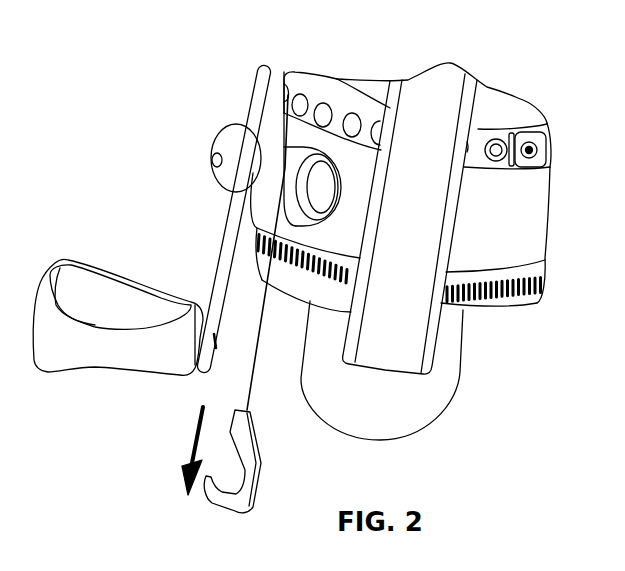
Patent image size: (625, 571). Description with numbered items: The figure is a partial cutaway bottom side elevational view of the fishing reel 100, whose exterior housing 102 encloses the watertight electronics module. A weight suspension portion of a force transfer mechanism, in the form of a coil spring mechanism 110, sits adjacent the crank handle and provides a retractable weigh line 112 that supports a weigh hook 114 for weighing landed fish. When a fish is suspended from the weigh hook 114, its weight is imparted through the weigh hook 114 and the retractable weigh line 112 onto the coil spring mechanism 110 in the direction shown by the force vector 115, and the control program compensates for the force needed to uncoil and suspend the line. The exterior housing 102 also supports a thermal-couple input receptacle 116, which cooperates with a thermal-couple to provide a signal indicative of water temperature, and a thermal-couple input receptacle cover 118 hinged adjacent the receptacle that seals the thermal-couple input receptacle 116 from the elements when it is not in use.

The fishing reel 100 is at (416, 62).
The exterior housing 102 is at (347, 93).
The coil spring mechanism 110 is at (288, 170).
The retractable weigh line 112 is at (250, 360).
The weigh hook 114 is at (263, 463).
The force vector 115 is at (190, 447).
The thermal-couple input receptacle 116 is at (497, 162).
The thermal-couple input receptacle cover 118 is at (528, 140).